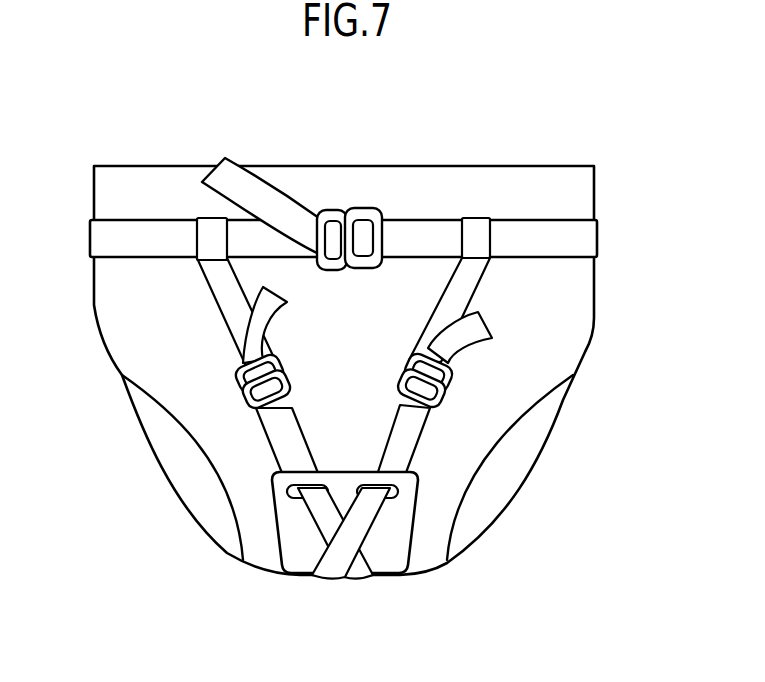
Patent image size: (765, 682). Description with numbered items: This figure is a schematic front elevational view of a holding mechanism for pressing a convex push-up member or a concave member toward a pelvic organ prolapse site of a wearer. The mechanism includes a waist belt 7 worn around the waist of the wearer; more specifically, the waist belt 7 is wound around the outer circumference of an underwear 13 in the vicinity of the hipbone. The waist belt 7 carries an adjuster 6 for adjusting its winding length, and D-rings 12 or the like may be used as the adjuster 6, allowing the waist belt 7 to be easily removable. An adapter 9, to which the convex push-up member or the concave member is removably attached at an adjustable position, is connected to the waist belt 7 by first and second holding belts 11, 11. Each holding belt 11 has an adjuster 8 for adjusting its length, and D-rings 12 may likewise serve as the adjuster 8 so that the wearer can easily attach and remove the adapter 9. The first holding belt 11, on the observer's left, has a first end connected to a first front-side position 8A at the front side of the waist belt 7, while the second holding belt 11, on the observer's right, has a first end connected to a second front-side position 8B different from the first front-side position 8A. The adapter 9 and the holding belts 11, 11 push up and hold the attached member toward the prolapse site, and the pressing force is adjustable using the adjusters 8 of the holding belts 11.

The adjuster 6 is at (313, 218).
The waist belt 7 is at (118, 236).
The adjuster 8 is at (453, 368).
The first front-side position 8A is at (208, 228).
The second front-side position 8B is at (475, 218).
The adapter 9 is at (383, 562).
The holding belt 11 is at (285, 443).
The D-ring 12 is at (363, 213).
The underwear 13 is at (578, 288).